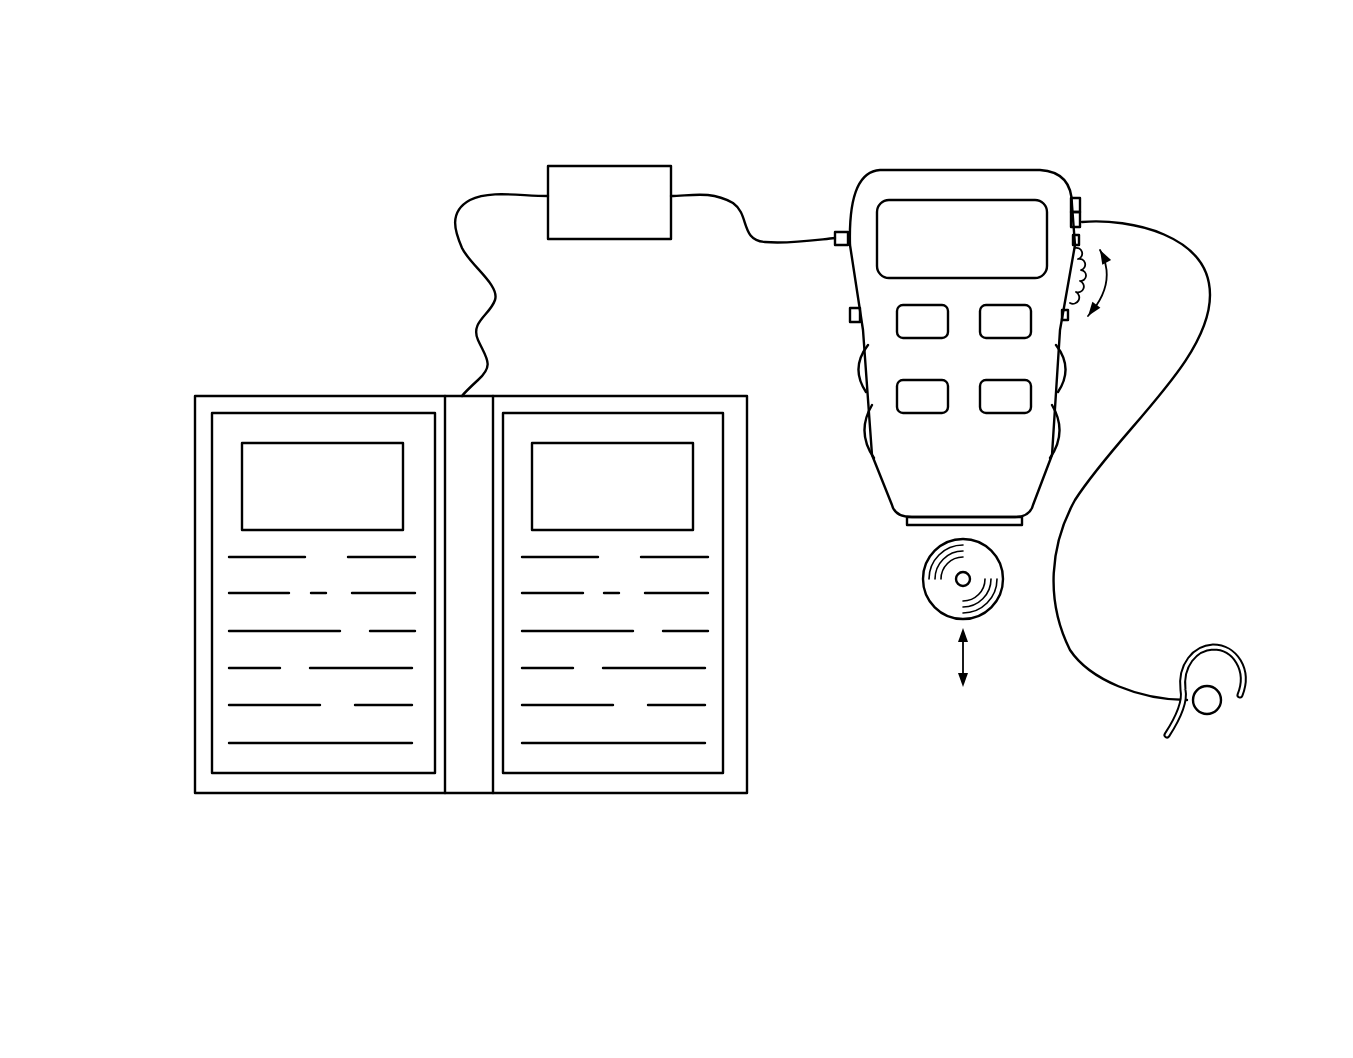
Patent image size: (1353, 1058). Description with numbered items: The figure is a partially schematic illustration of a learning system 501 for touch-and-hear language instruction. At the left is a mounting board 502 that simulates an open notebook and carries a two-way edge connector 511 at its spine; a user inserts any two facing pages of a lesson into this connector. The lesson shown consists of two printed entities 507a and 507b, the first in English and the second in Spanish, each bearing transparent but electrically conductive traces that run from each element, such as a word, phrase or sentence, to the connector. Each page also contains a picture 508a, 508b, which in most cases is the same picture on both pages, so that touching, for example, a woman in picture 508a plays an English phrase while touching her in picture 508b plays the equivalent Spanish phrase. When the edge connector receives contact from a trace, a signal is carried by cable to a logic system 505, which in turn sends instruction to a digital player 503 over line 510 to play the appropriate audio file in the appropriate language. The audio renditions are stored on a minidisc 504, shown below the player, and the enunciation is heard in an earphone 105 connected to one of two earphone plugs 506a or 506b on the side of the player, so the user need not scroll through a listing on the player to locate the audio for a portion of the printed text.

The learning system 501 is at (291, 136).
The mounting board 502 is at (248, 357).
The digital player 503 is at (943, 156).
The minidisc 504 is at (925, 589).
The logic system 505 is at (590, 213).
The earphone plug 506a is at (1078, 198).
The earphone plug 506b is at (1082, 222).
The printed entity 507a is at (226, 613).
The printed entity 507b is at (722, 693).
The picture 508a is at (255, 485).
The picture 508b is at (675, 485).
The line 510 is at (713, 192).
The edge connector 511 is at (470, 789).
The earphone 105 is at (1247, 625).